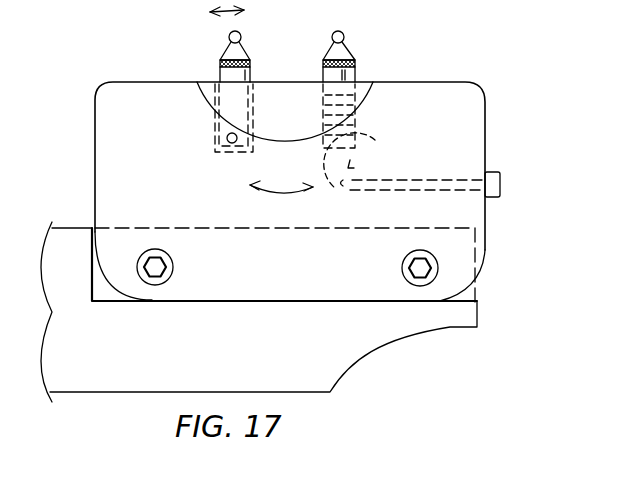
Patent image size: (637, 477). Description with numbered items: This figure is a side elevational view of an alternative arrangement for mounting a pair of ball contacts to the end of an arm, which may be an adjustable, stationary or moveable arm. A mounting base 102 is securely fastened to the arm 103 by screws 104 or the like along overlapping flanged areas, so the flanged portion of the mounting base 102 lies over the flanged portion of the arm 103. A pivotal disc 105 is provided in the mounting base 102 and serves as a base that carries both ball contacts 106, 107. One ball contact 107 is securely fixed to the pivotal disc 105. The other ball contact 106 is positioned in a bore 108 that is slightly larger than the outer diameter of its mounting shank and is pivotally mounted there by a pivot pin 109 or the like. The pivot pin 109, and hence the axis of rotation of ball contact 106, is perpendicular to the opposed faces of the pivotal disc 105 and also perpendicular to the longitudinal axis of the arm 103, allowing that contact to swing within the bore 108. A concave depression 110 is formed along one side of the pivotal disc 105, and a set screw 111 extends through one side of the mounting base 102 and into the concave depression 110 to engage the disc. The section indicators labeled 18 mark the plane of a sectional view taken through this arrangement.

The mounting base 102 is at (487, 118).
The arm 103 is at (387, 347).
The screws 104 is at (485, 250).
The pivotal disc 105 is at (384, 100).
The ball contact 106 is at (229, 35).
The ball contact 107 is at (344, 36).
The bore 108 is at (212, 97).
The pivot pin 109 is at (227, 138).
The concave depression 110 is at (372, 145).
The set screw 111 is at (500, 172).
The section line 18- 18 is at (520, 38).